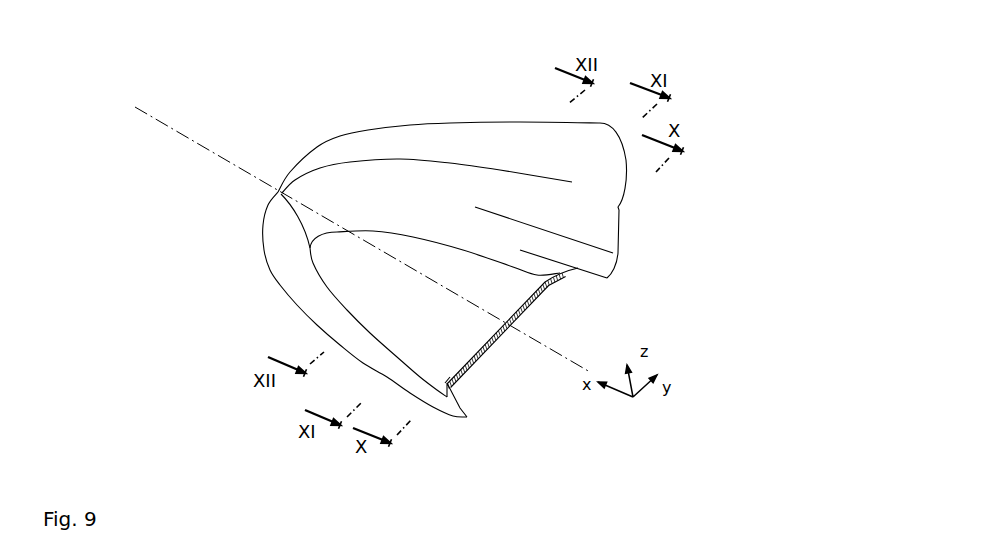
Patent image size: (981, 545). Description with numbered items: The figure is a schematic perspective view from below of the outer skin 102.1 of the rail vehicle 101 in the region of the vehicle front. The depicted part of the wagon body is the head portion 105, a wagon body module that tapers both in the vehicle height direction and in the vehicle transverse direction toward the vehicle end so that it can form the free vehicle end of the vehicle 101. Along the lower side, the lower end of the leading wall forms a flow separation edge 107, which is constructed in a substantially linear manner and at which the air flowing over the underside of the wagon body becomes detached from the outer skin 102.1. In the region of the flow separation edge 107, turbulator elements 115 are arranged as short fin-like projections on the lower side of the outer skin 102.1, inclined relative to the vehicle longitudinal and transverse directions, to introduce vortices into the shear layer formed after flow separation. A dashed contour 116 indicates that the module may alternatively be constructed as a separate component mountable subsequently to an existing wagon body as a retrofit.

The rail vehicle 101 is at (775, 78).
The head portion 105 is at (368, 131).
The outer skin 102.1 is at (278, 192).
The dashed contour 116 is at (313, 262).
The flow separation edge 107 is at (518, 318).
The turbulator element 115 is at (472, 365).